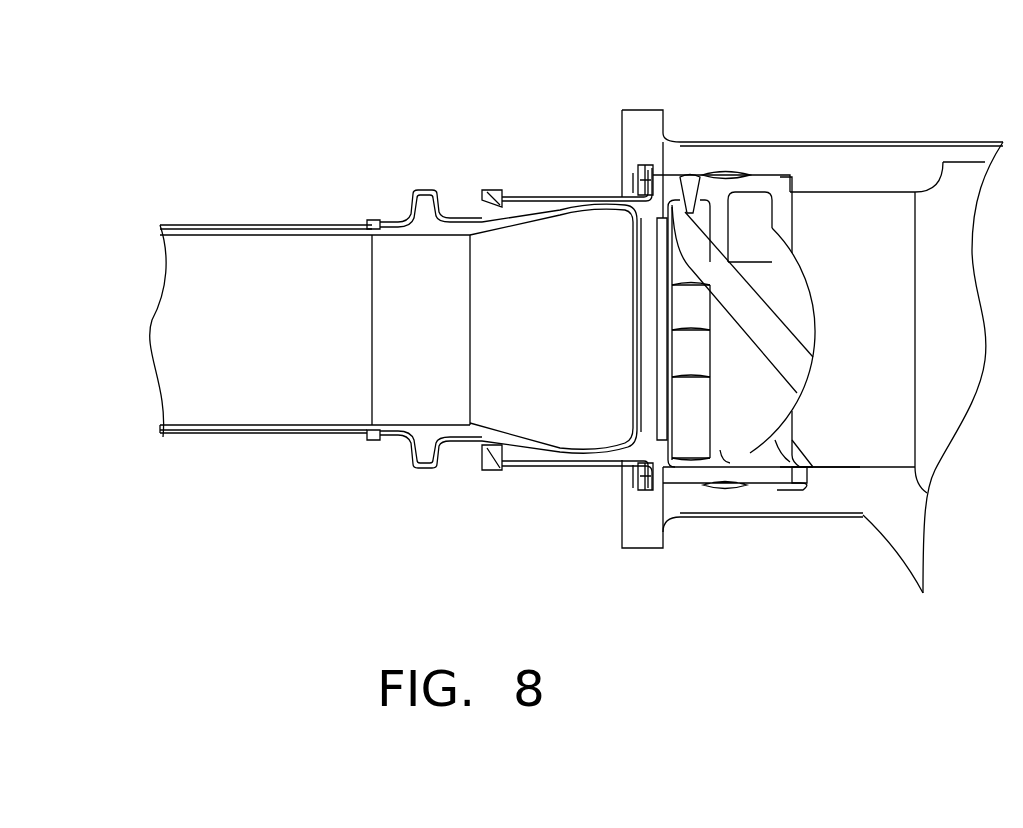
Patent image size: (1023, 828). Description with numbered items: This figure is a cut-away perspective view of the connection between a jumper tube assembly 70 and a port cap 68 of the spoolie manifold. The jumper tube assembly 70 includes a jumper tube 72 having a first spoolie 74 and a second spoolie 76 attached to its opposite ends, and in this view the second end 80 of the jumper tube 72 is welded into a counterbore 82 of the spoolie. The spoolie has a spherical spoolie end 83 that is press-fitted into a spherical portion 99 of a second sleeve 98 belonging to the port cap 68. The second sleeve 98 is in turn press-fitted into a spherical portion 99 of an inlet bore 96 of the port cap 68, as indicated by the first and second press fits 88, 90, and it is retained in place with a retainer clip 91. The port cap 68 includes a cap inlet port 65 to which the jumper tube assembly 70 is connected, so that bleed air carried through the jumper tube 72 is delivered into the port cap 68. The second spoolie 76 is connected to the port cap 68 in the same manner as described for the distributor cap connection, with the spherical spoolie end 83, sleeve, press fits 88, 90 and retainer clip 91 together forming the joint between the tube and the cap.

The cap inlet port 65 is at (718, 142).
The port cap 68 is at (790, 142).
The jumper tube assembly 70 is at (286, 196).
The jumper tube 72 is at (240, 438).
The first spoolie 74 is at (450, 447).
The second spoolie 76 is at (585, 195).
The second end 80 is at (330, 220).
The counterbore 82 is at (310, 331).
The spherical spoolie end 83 is at (575, 447).
The first press fit 88 is at (683, 485).
The second press fit 90 is at (762, 490).
The retainer clip 91 is at (645, 165).
The inlet bore 96 is at (622, 475).
The second sleeve 98 is at (550, 470).
The spherical portion 99 is at (648, 432).